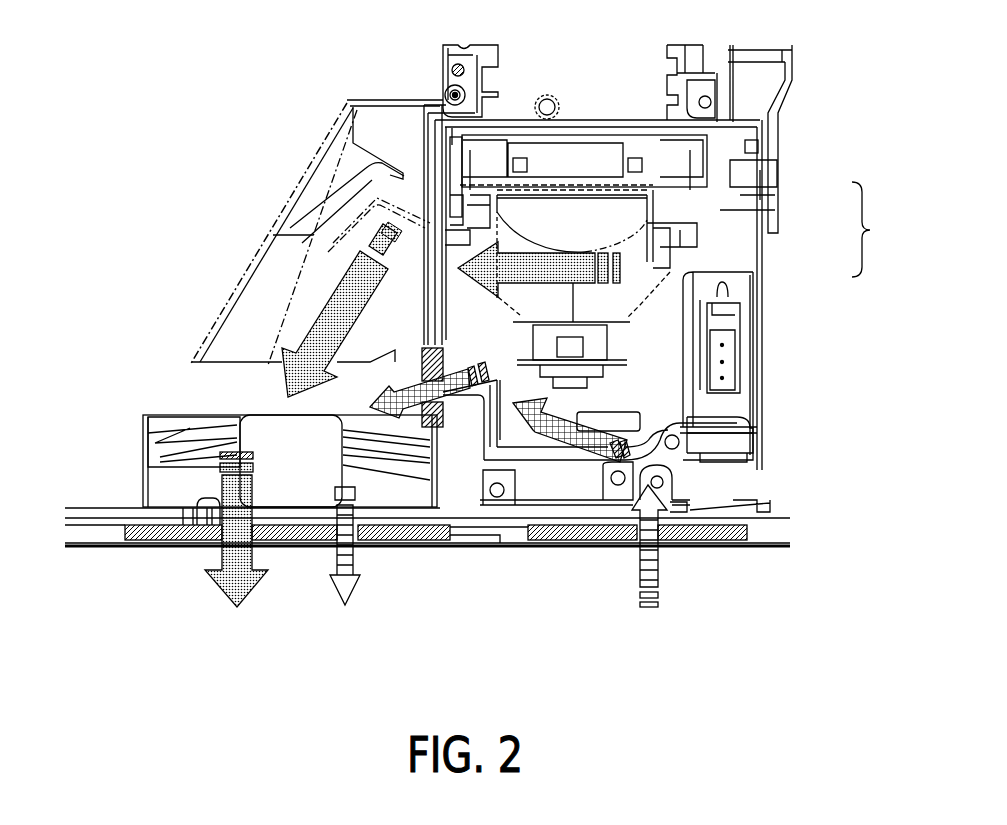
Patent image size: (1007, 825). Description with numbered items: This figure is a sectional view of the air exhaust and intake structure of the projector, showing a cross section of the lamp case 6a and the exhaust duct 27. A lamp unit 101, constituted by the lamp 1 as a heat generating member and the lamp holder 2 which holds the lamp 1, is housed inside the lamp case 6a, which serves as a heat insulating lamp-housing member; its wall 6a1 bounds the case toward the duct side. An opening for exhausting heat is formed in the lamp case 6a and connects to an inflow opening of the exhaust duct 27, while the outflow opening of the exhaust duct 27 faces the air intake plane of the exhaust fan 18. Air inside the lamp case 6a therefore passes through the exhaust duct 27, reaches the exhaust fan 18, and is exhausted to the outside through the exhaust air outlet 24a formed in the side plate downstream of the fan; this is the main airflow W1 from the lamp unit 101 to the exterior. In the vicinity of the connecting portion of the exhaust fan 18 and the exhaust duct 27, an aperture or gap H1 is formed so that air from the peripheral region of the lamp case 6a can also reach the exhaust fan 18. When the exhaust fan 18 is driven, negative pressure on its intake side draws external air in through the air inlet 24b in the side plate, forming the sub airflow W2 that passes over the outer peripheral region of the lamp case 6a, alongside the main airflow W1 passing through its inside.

The lamp 1 is at (628, 223).
The lamp holder 2 is at (608, 162).
The lamp unit 101 is at (886, 229).
The lamp case 6a is at (667, 425).
The side wall 6a1 is at (422, 227).
The exhaust fan 18 is at (180, 428).
The exhaust air outlet 24a is at (185, 532).
The air inlet 24b is at (728, 532).
The exhaust duct 27 is at (320, 190).
The aperture (gap) H1 is at (447, 427).
The main airflow W1 is at (236, 547).
The sub airflow W2 is at (683, 563).